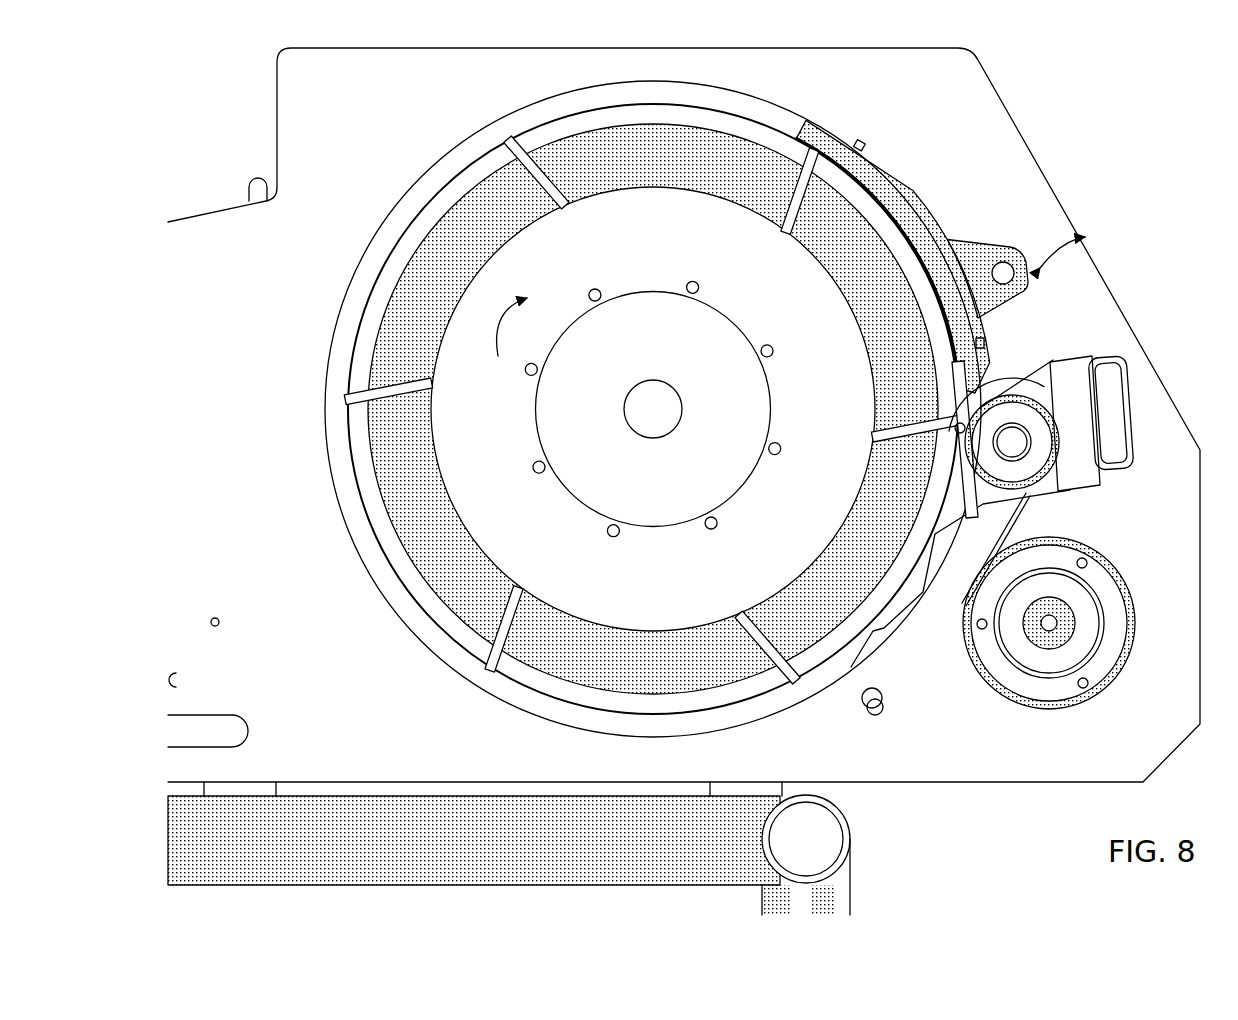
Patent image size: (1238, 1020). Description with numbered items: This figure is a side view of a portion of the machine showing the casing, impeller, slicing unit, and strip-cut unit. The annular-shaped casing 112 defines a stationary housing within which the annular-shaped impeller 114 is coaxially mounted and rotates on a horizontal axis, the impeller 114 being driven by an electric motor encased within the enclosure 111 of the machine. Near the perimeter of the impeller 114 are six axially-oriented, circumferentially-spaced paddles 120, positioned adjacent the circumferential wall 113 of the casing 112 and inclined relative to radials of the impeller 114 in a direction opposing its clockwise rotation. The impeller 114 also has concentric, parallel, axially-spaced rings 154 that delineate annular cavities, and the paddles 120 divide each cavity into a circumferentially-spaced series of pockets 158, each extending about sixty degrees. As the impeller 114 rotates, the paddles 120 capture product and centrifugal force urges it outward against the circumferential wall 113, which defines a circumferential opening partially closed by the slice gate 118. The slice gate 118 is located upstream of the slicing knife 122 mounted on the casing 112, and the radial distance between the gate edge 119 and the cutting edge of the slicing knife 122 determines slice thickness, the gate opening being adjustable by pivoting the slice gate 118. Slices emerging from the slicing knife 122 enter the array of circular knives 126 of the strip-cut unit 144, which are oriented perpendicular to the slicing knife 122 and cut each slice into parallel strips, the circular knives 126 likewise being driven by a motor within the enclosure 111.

The enclosure 111 is at (1025, 182).
The casing 112 is at (328, 433).
The circumferential wall 113 is at (345, 497).
The impeller 114 is at (401, 331).
The slice gate 118 is at (960, 243).
The gate edge 119 is at (985, 385).
The paddles 120 is at (542, 200).
The slicing knife 122 is at (958, 427).
The circular knives 126 is at (1034, 467).
The strip-cut unit 144 is at (1133, 408).
The rings 154 is at (757, 163).
The pockets 158 is at (698, 173).